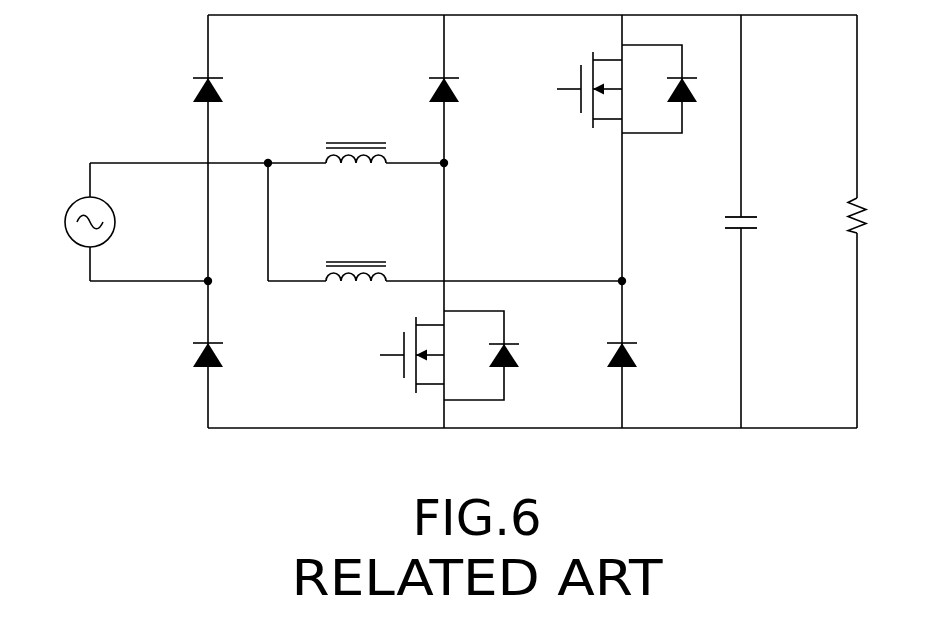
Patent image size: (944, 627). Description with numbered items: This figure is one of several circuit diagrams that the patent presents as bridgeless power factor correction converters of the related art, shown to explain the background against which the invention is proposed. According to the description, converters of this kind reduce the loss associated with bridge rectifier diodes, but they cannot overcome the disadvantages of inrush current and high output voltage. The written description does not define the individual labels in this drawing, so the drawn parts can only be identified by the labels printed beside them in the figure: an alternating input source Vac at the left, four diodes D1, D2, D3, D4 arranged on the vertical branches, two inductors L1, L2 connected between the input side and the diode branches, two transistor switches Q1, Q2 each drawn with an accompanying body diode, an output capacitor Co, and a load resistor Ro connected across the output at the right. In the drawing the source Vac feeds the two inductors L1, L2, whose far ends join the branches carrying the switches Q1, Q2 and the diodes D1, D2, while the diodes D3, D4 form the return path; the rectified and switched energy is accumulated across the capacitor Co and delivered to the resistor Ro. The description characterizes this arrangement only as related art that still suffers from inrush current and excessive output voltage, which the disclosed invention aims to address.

The AC input voltage source Vac is at (65, 222).
The diode D1 is at (462, 91).
The diode D2 is at (641, 357).
The diode D3 is at (226, 91).
The diode D4 is at (226, 357).
The inductor L1 is at (356, 172).
The inductor L2 is at (356, 290).
The switching transistor (MOSFET) Q1 is at (446, 365).
The switching transistor (MOSFET) Q2 is at (623, 79).
The output capacitor Co is at (760, 224).
The output load resistor Ro is at (876, 218).